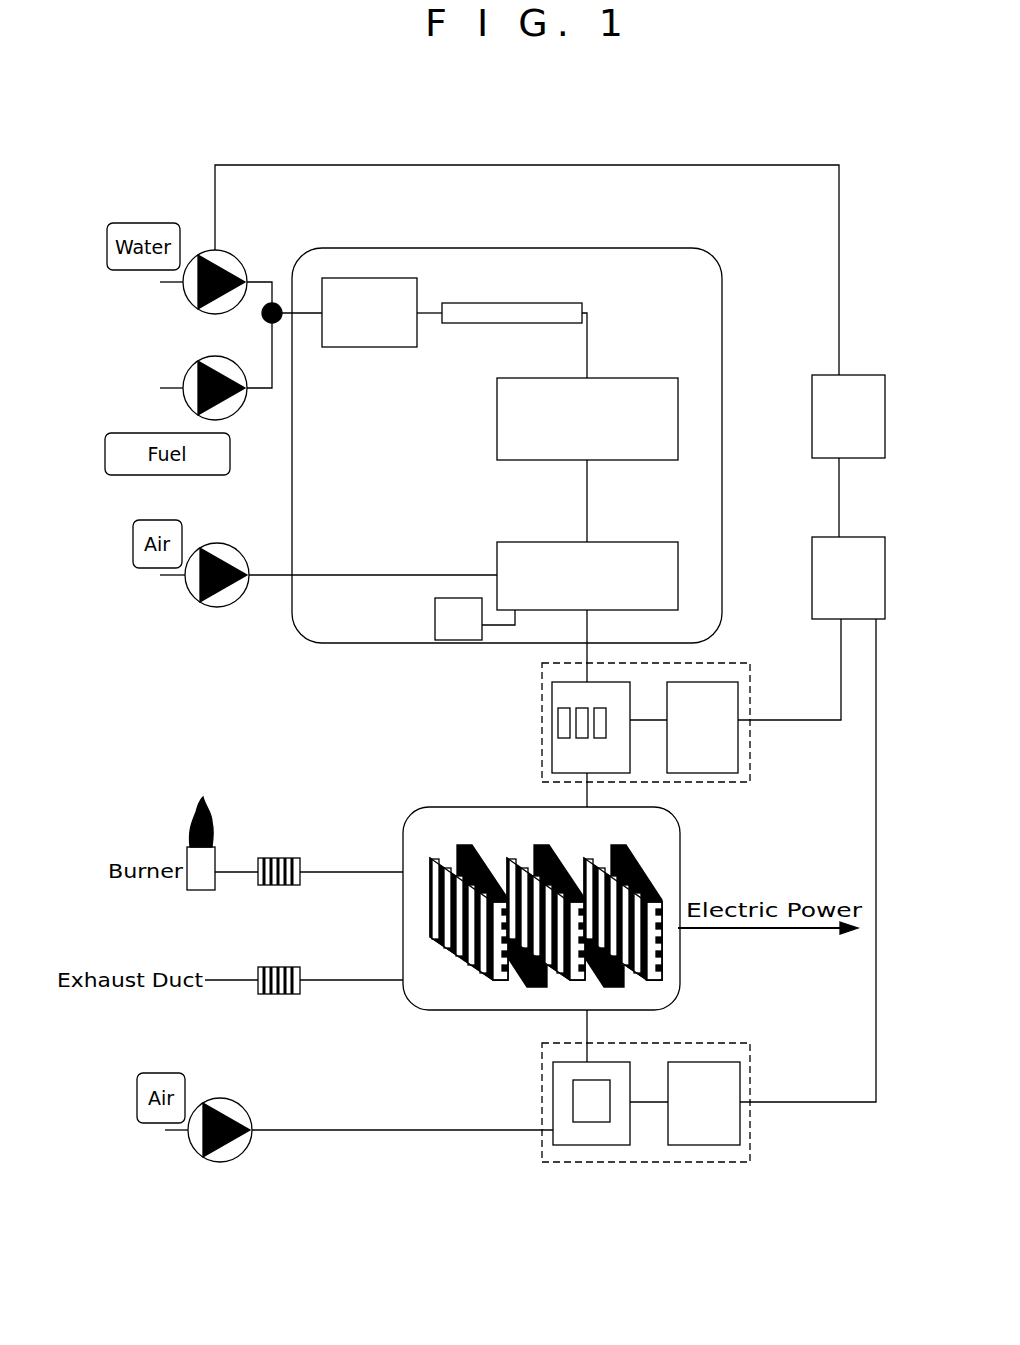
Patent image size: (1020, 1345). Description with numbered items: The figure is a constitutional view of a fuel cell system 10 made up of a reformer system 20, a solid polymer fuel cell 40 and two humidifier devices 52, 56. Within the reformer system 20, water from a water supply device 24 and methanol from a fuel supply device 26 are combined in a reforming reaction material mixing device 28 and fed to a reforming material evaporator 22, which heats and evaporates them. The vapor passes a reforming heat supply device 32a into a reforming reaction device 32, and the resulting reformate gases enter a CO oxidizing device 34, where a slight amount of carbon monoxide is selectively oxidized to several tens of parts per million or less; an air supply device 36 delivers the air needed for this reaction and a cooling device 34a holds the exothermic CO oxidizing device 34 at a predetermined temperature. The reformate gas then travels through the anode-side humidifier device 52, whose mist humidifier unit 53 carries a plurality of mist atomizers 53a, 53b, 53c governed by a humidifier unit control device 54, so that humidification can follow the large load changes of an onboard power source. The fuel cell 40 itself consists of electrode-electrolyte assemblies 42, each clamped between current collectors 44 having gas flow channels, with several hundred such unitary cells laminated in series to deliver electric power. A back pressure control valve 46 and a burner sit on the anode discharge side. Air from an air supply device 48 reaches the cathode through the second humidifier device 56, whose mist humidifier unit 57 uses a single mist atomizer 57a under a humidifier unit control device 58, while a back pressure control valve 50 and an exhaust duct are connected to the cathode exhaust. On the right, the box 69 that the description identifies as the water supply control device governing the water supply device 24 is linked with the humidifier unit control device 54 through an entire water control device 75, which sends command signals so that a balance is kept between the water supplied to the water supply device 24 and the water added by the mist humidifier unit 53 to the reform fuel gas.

The fuel cell system 10 is at (706, 244).
The reformer system 20 is at (502, 248).
The reforming material evaporator 22 is at (370, 347).
The water supply device 24 is at (242, 265).
The fuel supply device 26 is at (242, 410).
The reforming reaction material mixing device 28 is at (280, 318).
The reforming reaction device 32 is at (606, 378).
The reforming heat supply device 32a is at (521, 303).
The CO oxidizing device 34 is at (526, 542).
The cooling device 34a is at (435, 612).
The air supply device 36 is at (222, 607).
The fuel cell 40 is at (400, 850).
The electrode-electrolyte assembly 42 is at (640, 988).
The current collector 44 is at (500, 855).
The back pressure control valve 46 is at (270, 858).
The air supply device 48 is at (238, 1102).
The back pressure control valve 50 is at (272, 967).
The humidifier device 52 is at (540, 716).
The mist humidifier unit 53 is at (628, 705).
The mist atomizer 53a is at (571, 738).
The mist atomizer 53b is at (582, 738).
The mist atomizer 53c is at (600, 708).
The humidifier unit control device 54 is at (668, 746).
The humidifier device 56 is at (542, 1078).
The mist humidifier unit 57 is at (626, 1062).
The mist atomizer 57a is at (584, 1122).
The humidifier unit control device 58 is at (668, 1106).
The control device 69 is at (885, 408).
The entire water control device 75 is at (880, 556).